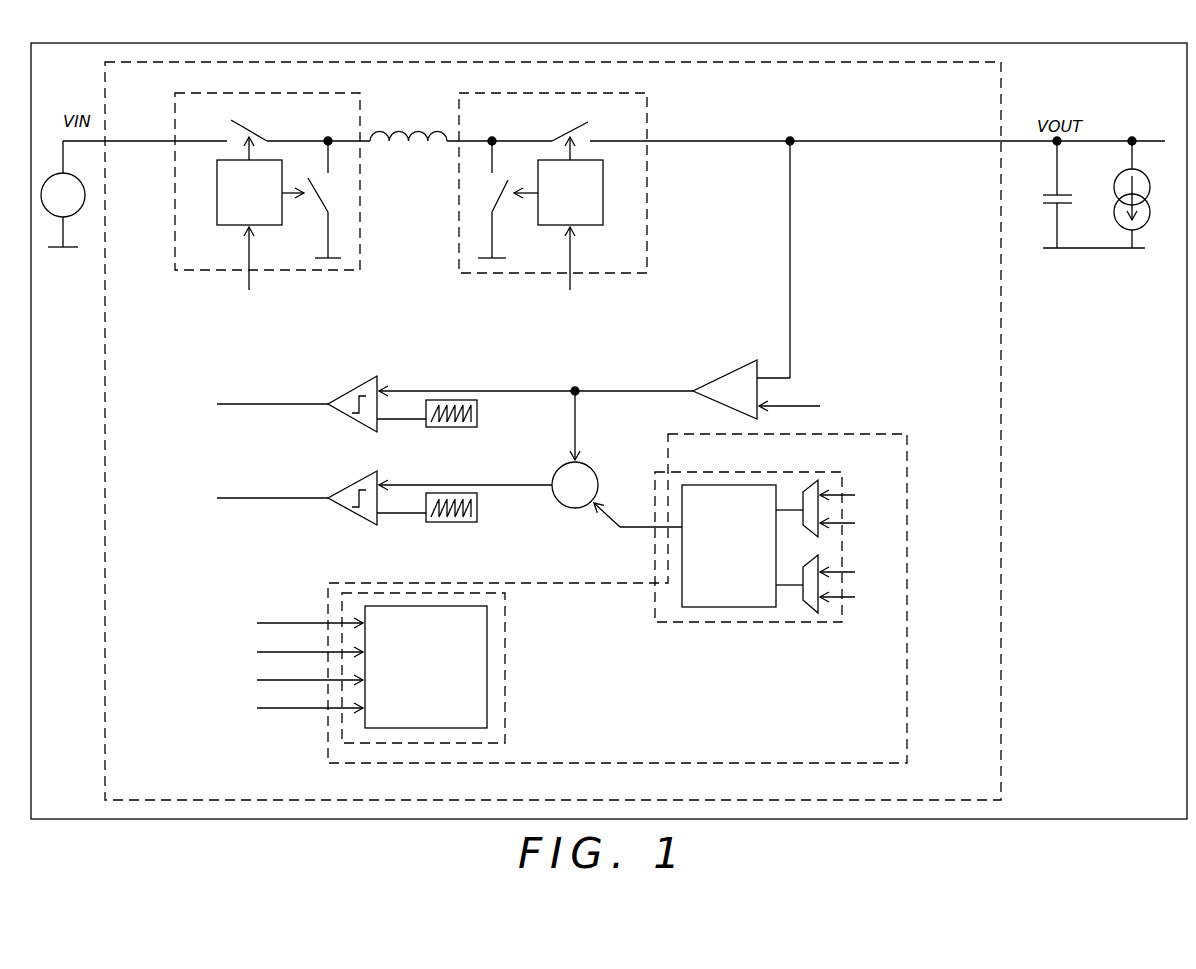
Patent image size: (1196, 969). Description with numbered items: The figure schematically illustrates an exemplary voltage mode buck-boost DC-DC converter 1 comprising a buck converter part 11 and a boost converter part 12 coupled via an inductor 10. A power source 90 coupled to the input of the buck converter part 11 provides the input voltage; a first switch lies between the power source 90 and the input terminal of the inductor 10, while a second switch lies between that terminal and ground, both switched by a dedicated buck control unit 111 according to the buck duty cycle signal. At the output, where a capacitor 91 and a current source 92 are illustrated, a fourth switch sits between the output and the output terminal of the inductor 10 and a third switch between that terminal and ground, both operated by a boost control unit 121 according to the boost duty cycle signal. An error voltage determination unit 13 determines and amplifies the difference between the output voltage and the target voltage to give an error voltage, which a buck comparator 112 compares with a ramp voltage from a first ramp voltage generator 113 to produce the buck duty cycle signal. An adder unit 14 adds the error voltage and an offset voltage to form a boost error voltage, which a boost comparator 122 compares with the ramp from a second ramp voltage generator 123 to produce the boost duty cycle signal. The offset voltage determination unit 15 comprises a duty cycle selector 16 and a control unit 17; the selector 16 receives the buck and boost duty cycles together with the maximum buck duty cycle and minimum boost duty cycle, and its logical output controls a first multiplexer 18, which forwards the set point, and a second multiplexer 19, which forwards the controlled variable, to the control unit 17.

The buck-boost converter 1 is at (1001, 377).
The inductor 10 is at (410, 147).
The buck converter part 11 is at (290, 199).
The boost converter part 12 is at (574, 200).
The error voltage determination unit 13 is at (718, 378).
The adder unit 14 is at (598, 475).
The offset voltage determination unit 15 is at (907, 735).
The duty cycle selector 16 is at (319, 668).
The control unit 17 is at (748, 547).
The first multiplexer 18 is at (804, 497).
The second multiplexer 19 is at (804, 600).
The power source 90 is at (63, 194).
The capacitor 91 is at (1073, 200).
The current source 92 is at (1150, 205).
The buck control unit 111 is at (249, 192).
The buck comparator 112 is at (350, 390).
The first ramp voltage generator 113 is at (460, 427).
The boost control unit 121 is at (570, 192).
The boost comparator 122 is at (350, 484).
The second ramp voltage generator 123 is at (460, 522).